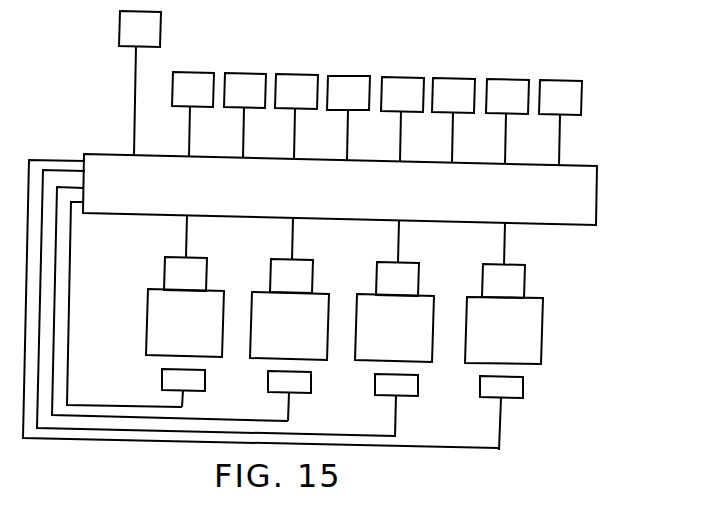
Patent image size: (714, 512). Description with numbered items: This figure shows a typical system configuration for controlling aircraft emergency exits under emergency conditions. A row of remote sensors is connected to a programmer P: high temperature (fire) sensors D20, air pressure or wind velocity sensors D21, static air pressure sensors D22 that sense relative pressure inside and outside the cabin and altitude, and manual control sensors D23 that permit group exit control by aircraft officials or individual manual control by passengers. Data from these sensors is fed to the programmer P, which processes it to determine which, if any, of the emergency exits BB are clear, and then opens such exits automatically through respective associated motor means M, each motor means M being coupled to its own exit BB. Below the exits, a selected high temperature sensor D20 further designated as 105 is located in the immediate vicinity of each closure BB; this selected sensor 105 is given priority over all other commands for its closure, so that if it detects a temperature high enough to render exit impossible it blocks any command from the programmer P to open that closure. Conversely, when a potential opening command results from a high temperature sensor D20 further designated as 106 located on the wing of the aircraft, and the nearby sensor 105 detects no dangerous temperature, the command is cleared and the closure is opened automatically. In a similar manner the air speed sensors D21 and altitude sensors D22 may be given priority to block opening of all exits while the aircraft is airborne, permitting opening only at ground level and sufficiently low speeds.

The wing-mounted high temperature sensor 106 is at (120, 31).
The high temperature sensors D20 is at (249, 86).
The air pressure sensors D21 is at (350, 88).
The static air pressure sensors D22 is at (454, 90).
The manual control sensors D23 is at (557, 93).
The programmer P is at (597, 193).
The motor means M is at (272, 276).
The emergency exits BB is at (281, 333).
The selected high temperature sensor 105 is at (268, 384).